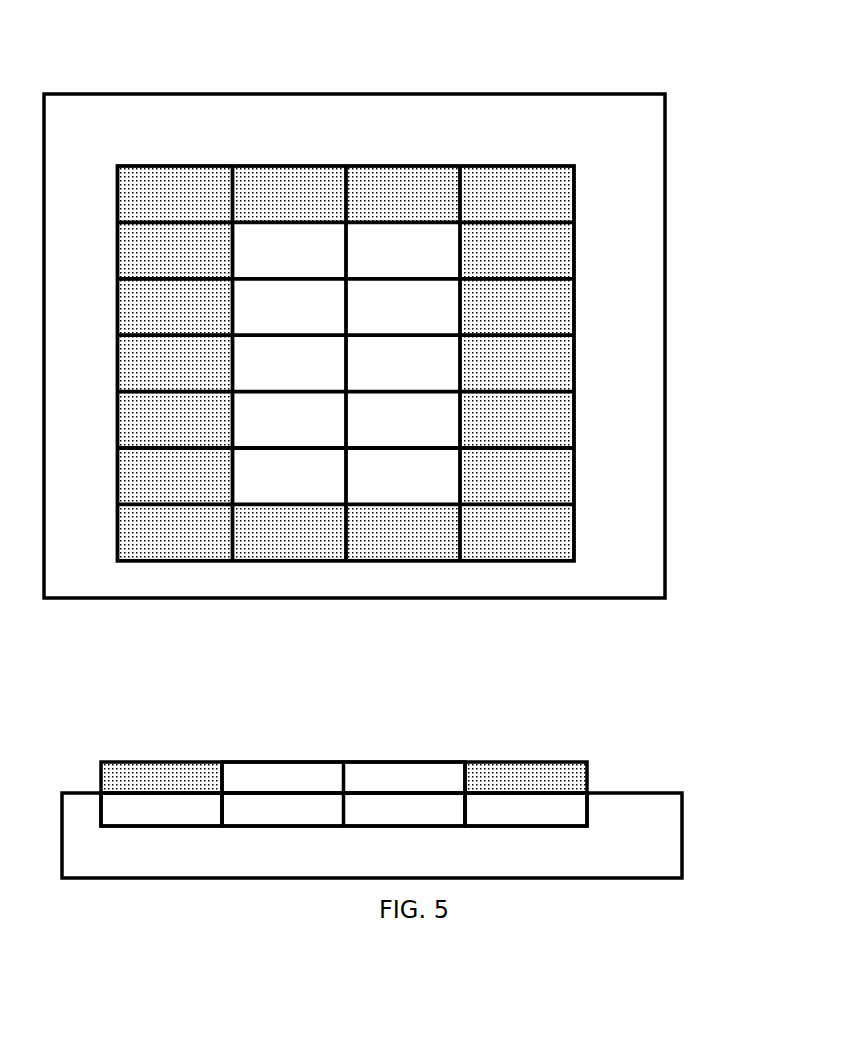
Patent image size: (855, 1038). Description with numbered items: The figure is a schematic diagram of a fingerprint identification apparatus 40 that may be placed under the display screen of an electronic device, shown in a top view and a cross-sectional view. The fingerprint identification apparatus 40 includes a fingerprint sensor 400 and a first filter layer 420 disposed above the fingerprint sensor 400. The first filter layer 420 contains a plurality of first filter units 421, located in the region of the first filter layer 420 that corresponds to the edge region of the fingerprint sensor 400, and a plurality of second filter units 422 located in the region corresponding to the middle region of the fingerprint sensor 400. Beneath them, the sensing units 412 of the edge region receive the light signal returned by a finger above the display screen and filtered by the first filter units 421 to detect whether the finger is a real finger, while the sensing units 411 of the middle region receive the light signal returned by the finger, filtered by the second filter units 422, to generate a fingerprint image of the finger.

The fingerprint identification apparatus 40 is at (387, 28).
The fingerprint sensor 400 is at (483, 600).
The first filter layer 420 is at (588, 773).
The first filter units 421 is at (344, 479).
The second filter units 422 is at (343, 777).
The sensing units of the middle region 411 is at (343, 809).
The sensing units of the edge region 412 is at (344, 809).